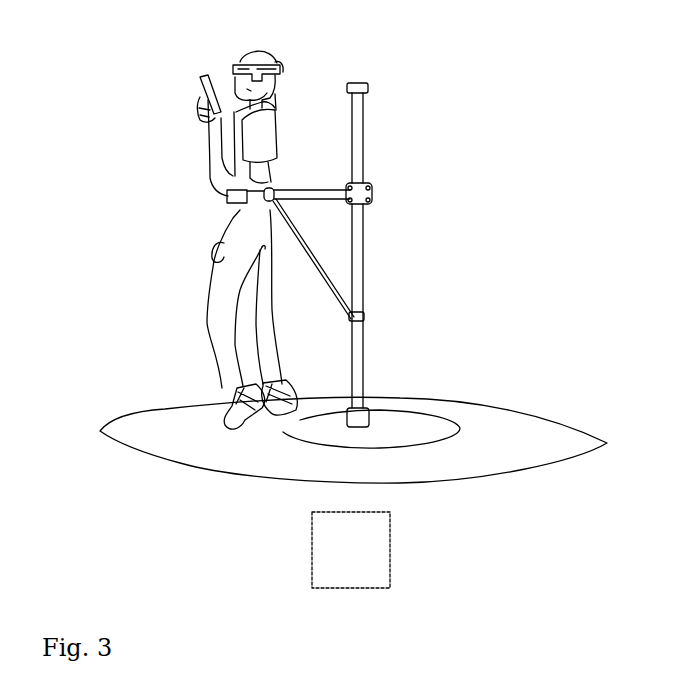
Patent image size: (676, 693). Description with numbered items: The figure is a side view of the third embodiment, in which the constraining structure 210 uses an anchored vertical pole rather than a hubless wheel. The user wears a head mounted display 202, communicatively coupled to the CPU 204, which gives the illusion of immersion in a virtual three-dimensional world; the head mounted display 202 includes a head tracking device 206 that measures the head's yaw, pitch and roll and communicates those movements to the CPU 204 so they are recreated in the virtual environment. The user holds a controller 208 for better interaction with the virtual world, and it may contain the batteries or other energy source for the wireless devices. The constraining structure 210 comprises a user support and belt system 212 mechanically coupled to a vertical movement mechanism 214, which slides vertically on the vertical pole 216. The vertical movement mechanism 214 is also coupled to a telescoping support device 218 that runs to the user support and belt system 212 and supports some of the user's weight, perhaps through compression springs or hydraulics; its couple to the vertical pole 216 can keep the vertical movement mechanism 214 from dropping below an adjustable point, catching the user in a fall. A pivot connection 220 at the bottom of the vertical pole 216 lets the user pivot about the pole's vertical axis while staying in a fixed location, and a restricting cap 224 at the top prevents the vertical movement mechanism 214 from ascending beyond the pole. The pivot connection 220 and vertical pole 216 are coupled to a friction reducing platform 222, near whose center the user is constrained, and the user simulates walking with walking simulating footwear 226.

The head mounted display 202 is at (233, 66).
The CPU 204 is at (351, 550).
The head tracking device 206 is at (274, 64).
The controller 208 is at (193, 87).
The constraining structure 210 is at (405, 395).
The user support and belt system 212 is at (222, 199).
The vertical movement mechanism 214 is at (375, 194).
The vertical pole 216 is at (370, 219).
The telescoping support device 218 is at (308, 264).
The pivot connection 220 is at (372, 420).
The friction reducing platform 222 is at (507, 422).
The restricting cap 224 is at (368, 89).
The walking simulating footwear 226 is at (233, 393).